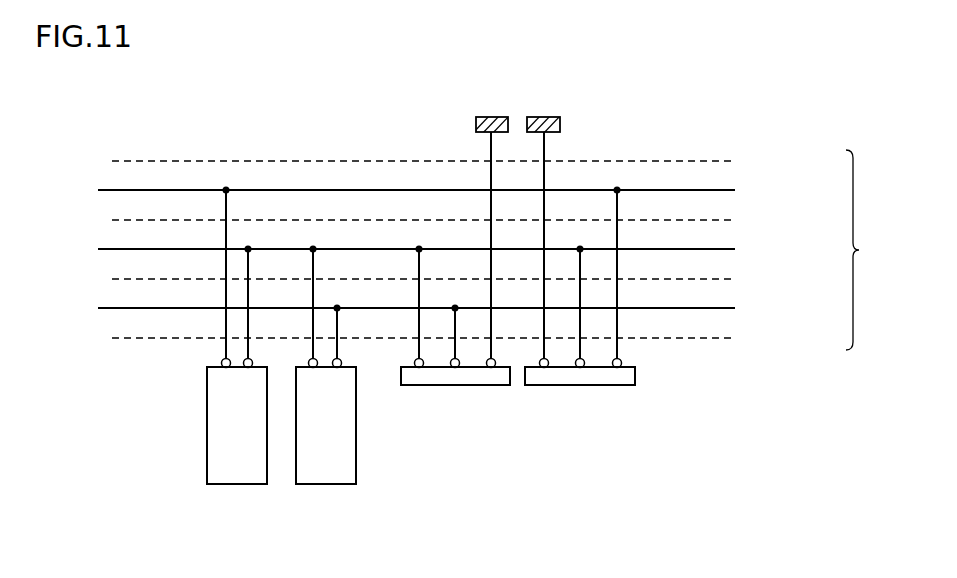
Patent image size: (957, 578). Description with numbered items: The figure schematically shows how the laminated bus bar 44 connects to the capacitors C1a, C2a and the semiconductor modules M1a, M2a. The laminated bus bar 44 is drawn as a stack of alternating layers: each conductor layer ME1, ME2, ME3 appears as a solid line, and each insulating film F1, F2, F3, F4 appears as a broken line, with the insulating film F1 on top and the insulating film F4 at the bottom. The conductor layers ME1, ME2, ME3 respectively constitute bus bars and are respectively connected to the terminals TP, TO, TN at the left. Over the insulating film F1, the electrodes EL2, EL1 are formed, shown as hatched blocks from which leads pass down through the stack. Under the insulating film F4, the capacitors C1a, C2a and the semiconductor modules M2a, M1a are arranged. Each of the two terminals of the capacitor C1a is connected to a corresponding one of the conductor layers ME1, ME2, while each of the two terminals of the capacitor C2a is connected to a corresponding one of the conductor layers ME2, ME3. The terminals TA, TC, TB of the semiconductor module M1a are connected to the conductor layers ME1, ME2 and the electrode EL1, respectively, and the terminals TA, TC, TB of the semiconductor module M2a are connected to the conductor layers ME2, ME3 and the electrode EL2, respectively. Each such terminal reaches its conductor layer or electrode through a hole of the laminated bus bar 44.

The laminated bus bar 44 is at (868, 250).
The conductor layer ME1 is at (465, 191).
The conductor layer ME2 is at (465, 250).
The conductor layer ME3 is at (465, 309).
The insulating film F1 is at (440, 162).
The insulating film F2 is at (440, 221).
The insulating film F3 is at (440, 280).
The insulating film F4 is at (440, 339).
The terminal TP is at (99, 191).
The terminal TO is at (98, 250).
The terminal TN is at (98, 309).
The electrode EL2 is at (491, 117).
The electrode EL1 is at (544, 117).
The capacitor C1a is at (238, 471).
The capacitor C2a is at (327, 471).
The semiconductor module M2a is at (400, 373).
The semiconductor module M1a is at (633, 373).
The terminal TA is at (418, 375).
The terminal TB is at (491, 375).
The terminal TC is at (455, 375).